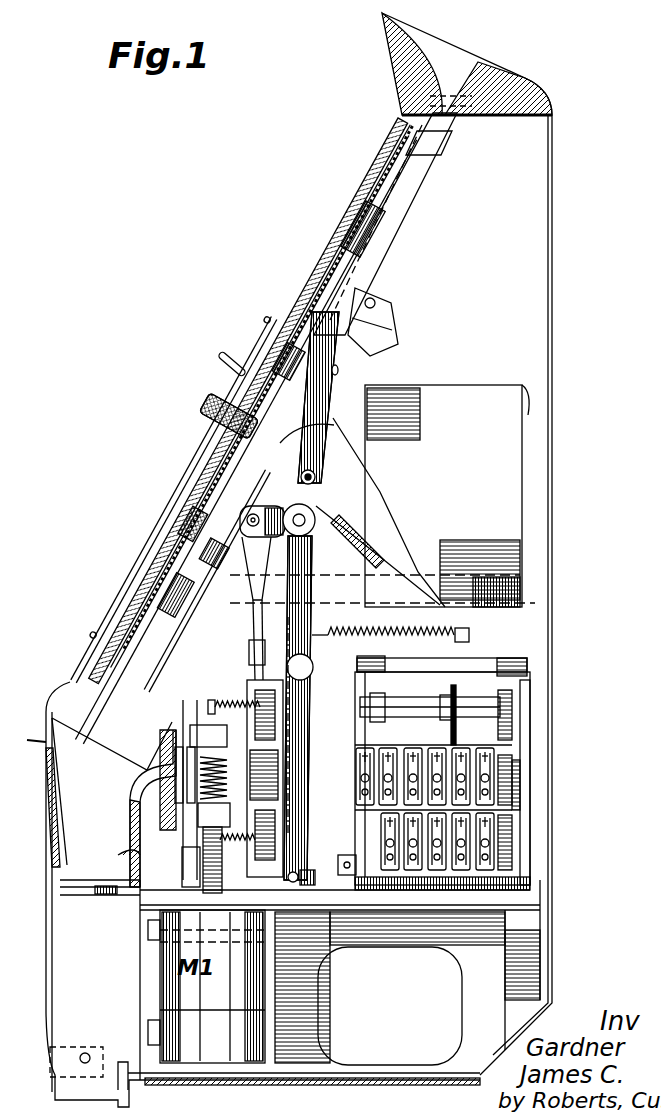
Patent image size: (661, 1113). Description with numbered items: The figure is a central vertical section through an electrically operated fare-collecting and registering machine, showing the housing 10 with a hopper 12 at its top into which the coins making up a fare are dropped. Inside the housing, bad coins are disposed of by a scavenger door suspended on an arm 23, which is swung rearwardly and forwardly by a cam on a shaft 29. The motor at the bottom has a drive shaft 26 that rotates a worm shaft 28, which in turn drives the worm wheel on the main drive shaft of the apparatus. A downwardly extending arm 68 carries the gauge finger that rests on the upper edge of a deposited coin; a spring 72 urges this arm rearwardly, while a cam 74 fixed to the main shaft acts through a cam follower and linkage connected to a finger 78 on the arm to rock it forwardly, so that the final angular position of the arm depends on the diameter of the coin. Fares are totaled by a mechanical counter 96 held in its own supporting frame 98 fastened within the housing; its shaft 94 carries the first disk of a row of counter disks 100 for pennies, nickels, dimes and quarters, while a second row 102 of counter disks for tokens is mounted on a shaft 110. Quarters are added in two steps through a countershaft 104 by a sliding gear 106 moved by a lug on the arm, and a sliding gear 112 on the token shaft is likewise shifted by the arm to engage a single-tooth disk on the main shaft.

The housing 10 is at (566, 258).
The hopper 12 is at (513, 78).
The arm 23 is at (339, 375).
The shaft 29 is at (330, 478).
The finger 78 is at (249, 503).
The arm 68 is at (305, 589).
The spring 72 is at (388, 614).
The sliding gear 106 is at (270, 685).
The worm shaft 28 is at (200, 793).
The cam 74 is at (251, 778).
The drive shaft 26 is at (276, 881).
The sliding gear 112 is at (341, 867).
The countershaft 104 is at (406, 707).
The mechanical counter 96 is at (512, 650).
The row of counter disks 100 is at (500, 745).
The shaft 94 is at (472, 775).
The supporting frame 98 is at (522, 818).
The shaft 110 is at (476, 838).
The second row of counter disks 102 is at (476, 857).